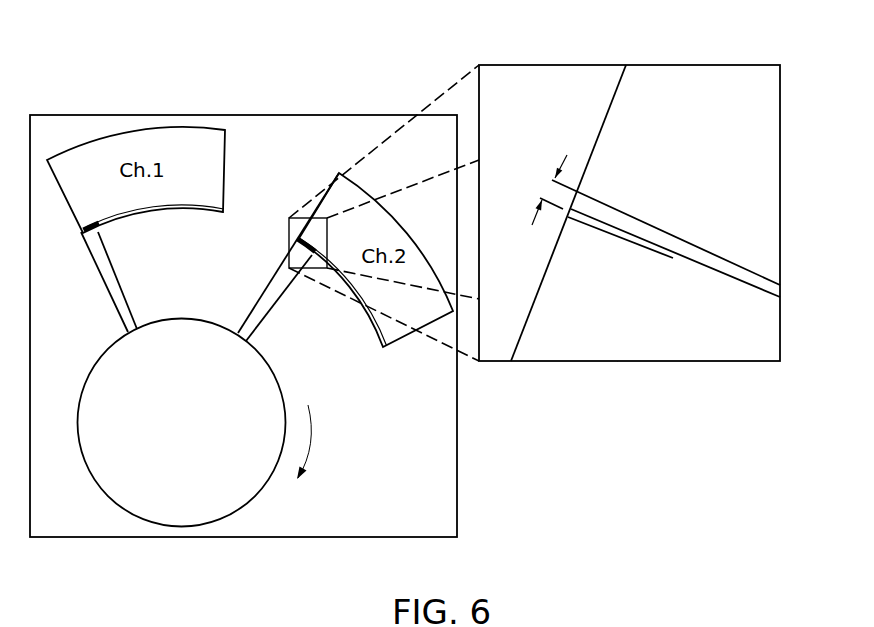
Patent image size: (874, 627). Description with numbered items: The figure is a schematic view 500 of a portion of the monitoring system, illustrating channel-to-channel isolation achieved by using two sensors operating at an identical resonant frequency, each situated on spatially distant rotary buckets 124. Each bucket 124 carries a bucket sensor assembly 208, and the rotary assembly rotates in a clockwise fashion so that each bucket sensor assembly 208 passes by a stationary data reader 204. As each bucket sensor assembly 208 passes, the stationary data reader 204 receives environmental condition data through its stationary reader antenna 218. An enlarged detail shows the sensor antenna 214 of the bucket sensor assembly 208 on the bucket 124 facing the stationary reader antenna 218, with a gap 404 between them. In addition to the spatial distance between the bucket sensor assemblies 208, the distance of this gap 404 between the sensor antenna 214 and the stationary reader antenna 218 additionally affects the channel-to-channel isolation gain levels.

The sensor system 500 is at (183, 55).
The rotary bucket 124 is at (113, 270).
The bucket sensor assembly 208 is at (126, 322).
The stationary data reader 204 is at (751, 114).
The gap 404 is at (567, 155).
The sensor antenna 214 is at (673, 258).
The stationary reader antenna 218 is at (780, 283).